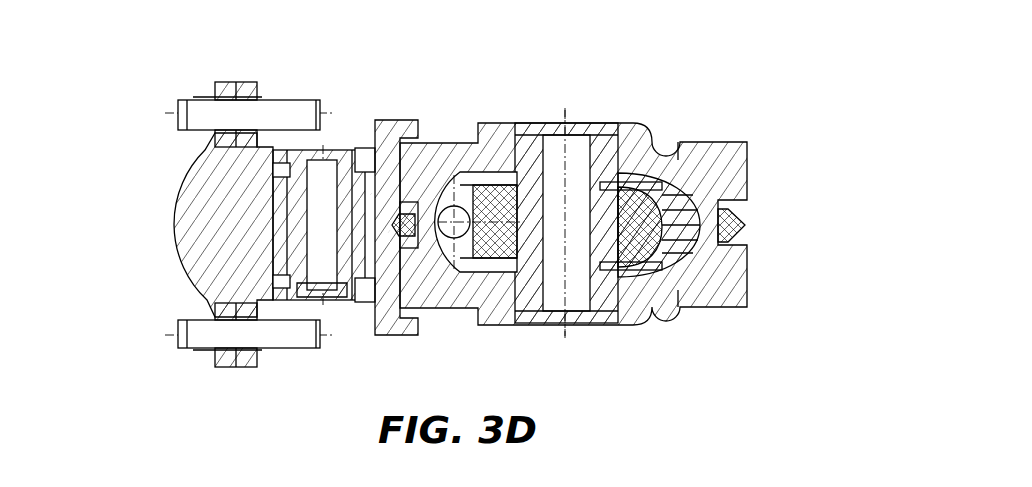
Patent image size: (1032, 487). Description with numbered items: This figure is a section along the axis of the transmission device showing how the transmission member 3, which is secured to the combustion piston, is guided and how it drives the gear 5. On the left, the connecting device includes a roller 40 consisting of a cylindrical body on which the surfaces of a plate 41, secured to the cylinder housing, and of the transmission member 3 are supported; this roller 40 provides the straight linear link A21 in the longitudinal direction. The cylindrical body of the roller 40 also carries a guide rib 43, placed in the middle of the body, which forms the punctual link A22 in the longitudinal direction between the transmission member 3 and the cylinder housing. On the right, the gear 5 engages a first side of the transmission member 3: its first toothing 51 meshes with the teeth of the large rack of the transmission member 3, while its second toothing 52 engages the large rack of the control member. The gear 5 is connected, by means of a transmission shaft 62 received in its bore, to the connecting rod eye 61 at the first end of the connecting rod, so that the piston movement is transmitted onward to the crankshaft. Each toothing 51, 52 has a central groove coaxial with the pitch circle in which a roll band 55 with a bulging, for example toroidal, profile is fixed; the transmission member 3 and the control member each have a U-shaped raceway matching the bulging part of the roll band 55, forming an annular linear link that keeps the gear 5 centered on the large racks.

The roller 40 is at (349, 122).
The plate 41 is at (187, 193).
The guide rib 43 is at (280, 228).
The transmission member 3 is at (402, 119).
The gear 5 is at (636, 150).
The second toothing 52 is at (740, 285).
The transmission shaft 62 is at (528, 153).
The connecting rod eye 61 is at (642, 233).
The first toothing 51 is at (415, 250).
The roll band 55 is at (417, 230).
The straight linear link A21 is at (370, 195).
The punctual link A22 is at (388, 233).